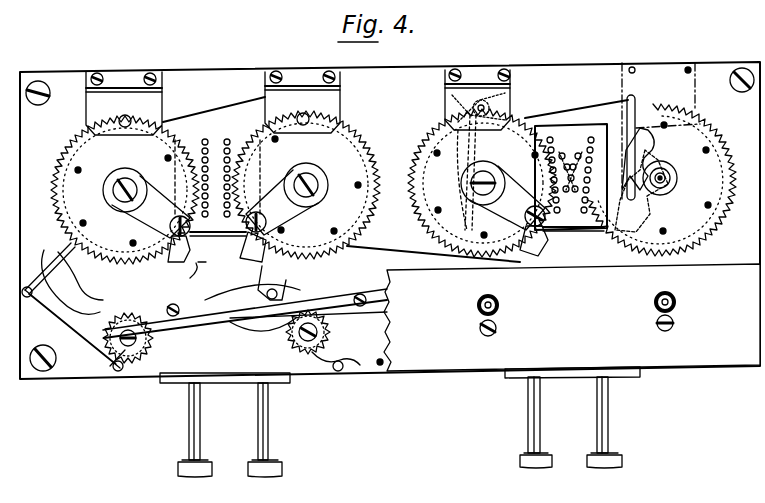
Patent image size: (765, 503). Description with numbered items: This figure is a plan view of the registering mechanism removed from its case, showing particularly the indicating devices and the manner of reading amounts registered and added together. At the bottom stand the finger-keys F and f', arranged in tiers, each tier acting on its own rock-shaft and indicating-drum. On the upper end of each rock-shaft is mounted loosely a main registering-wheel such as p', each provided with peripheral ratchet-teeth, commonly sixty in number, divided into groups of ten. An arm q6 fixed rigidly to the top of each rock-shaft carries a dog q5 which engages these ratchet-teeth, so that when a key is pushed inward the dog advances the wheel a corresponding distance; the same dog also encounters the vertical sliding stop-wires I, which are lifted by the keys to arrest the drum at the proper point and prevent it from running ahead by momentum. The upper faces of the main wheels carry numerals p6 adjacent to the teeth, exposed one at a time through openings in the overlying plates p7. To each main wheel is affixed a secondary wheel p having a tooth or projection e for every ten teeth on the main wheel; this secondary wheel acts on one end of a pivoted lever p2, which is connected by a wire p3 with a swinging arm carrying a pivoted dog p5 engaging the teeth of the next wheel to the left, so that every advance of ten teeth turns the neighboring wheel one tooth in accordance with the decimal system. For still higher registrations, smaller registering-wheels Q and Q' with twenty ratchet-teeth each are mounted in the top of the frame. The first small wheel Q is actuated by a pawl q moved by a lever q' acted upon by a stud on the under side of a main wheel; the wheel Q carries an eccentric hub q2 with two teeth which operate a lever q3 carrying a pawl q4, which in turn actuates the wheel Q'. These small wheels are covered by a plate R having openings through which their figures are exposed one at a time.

The secondary wheel p is at (677, 178).
The registering-wheel p' is at (483, 184).
The pivoted lever p2 is at (470, 185).
The wire p3 is at (408, 251).
The pivoted dog p5 is at (478, 158).
The numerals p6 is at (66, 152).
The overlying plates p7 is at (380, 100).
The pawl q is at (71, 305).
The lever q' is at (181, 291).
The eccentric hub q2 is at (155, 335).
The lever q3 is at (212, 298).
The pawl q4 is at (254, 298).
The dog q5 is at (368, 252).
The arm q6 is at (328, 202).
The tooth or projection e is at (638, 159).
The stop-wires I is at (226, 150).
The plate R is at (572, 317).
The finger-keys F is at (400, 474).
The finger-key f' is at (400, 413).
The small registering-wheel Q is at (117, 372).
The small registering-wheel Q' is at (346, 373).